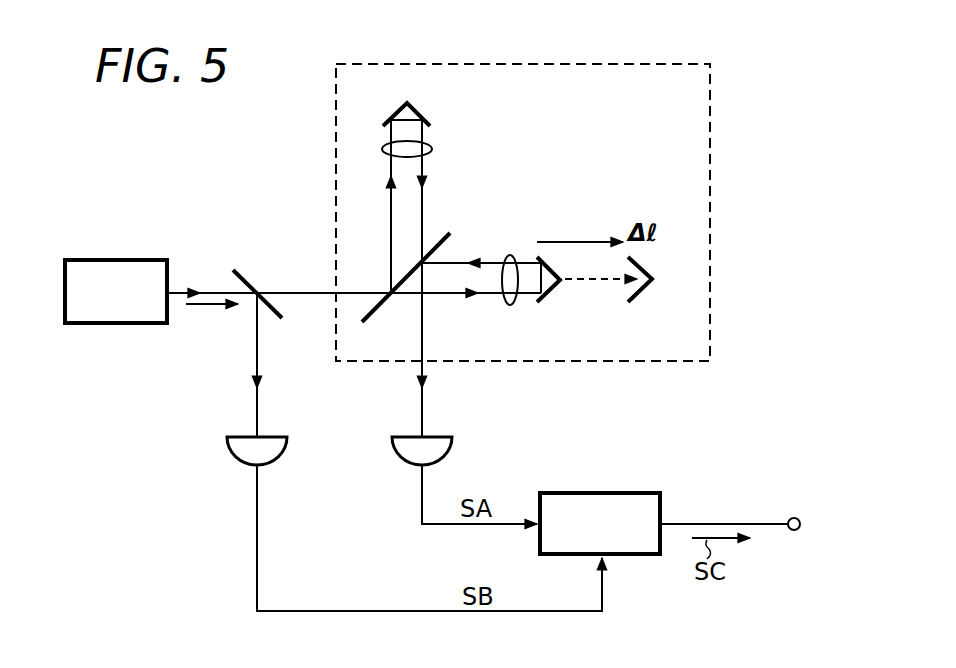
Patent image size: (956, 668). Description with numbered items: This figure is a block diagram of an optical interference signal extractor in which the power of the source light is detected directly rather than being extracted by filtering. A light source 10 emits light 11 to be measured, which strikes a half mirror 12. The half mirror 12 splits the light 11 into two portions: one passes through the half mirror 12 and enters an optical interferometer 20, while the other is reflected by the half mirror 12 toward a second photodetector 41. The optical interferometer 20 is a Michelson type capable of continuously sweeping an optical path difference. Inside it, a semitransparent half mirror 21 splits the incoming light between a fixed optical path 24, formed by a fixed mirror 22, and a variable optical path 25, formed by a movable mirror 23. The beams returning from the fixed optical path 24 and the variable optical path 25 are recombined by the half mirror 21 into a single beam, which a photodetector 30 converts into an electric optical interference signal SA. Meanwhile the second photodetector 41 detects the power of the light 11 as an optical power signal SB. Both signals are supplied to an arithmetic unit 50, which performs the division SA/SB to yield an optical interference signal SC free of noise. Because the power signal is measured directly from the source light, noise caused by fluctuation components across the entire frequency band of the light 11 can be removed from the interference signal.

The light source 10 is at (148, 260).
The light 11 is at (207, 306).
The half mirror 12 is at (268, 258).
The optical interferometer 20 is at (712, 107).
The half mirror 21 is at (449, 224).
The fixed mirror 22 is at (414, 110).
The movable mirror 23 is at (545, 292).
The fixed optical path 24 is at (433, 148).
The variable optical path 25 is at (507, 256).
The photodetector 30 is at (439, 436).
The second photodetector 41 is at (244, 462).
The arithmetic unit 50 is at (634, 493).